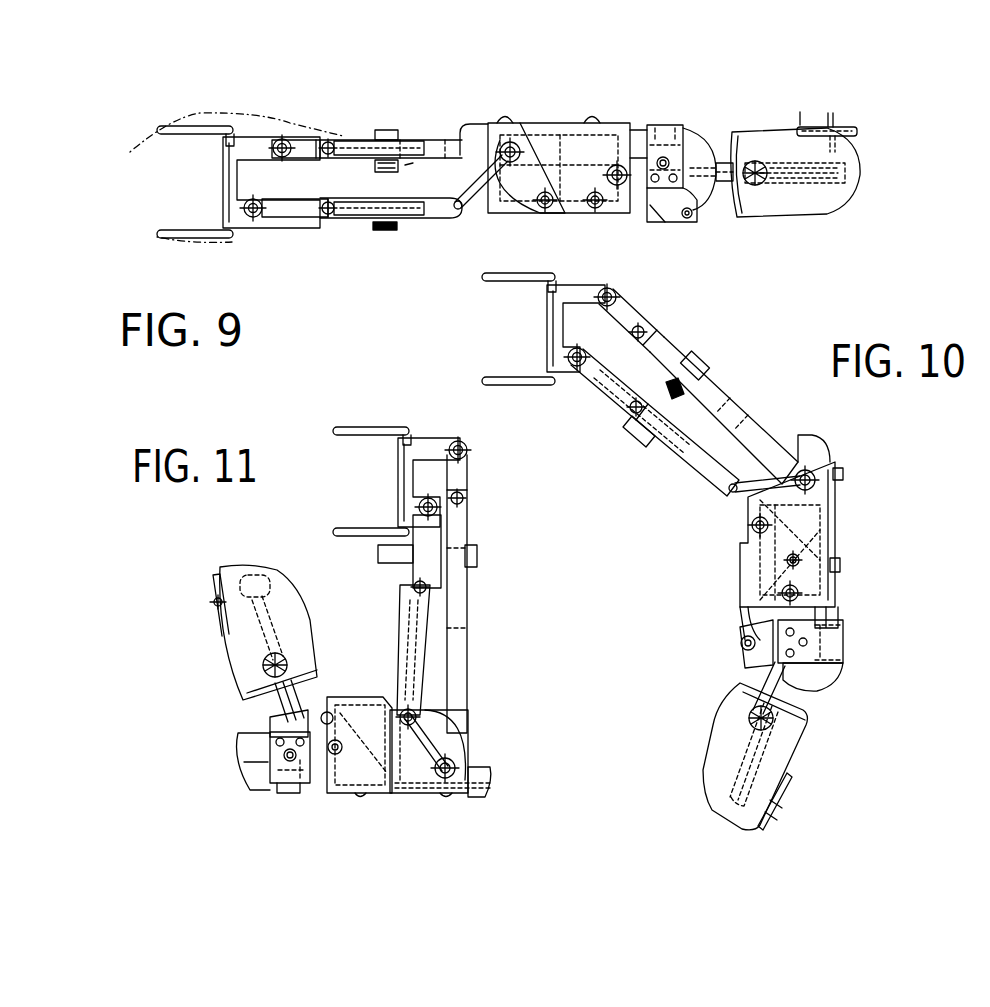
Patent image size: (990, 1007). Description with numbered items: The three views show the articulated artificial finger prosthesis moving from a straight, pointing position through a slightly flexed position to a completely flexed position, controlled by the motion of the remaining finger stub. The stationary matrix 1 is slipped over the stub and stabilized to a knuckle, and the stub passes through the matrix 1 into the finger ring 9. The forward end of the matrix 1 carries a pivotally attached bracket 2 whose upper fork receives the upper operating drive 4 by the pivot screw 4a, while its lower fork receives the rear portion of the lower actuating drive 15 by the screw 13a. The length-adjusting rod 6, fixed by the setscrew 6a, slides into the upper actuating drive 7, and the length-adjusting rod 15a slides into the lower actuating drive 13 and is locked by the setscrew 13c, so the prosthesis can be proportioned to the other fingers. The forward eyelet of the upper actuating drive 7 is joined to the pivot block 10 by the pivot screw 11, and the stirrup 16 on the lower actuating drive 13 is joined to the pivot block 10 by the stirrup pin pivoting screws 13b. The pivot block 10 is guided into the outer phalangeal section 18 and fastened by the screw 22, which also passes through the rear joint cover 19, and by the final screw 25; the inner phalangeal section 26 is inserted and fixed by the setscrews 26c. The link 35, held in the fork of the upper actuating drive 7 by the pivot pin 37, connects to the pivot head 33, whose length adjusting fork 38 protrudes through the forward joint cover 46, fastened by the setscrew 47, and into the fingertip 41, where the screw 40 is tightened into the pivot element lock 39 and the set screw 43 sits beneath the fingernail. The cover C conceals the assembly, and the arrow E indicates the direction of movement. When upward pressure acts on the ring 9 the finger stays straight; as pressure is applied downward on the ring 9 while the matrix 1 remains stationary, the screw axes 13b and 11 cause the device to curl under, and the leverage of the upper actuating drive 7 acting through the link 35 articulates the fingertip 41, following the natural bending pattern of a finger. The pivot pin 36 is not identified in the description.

In FIG. 9, the stationary matrix 1 is at (167, 126).
In FIG. 10, the stationary matrix 1 is at (507, 380).
In FIG. 11, the stationary matrix 1 is at (375, 427).
In FIG. 9, the bracket 2 is at (227, 165).
In FIG. 10, the bracket 2 is at (580, 291).
In FIG. 11, the bracket 2 is at (432, 440).
In FIG. 10, the upper operating drive 4 is at (622, 315).
In FIG. 11, the upper operating drive 4 is at (470, 472).
In FIG. 9, the pivot screw 4a is at (285, 139).
In FIG. 10, the pivot screw 4a is at (618, 297).
In FIG. 11, the pivot screw 4a is at (459, 440).
In FIG. 9, the length-adjusting rod 6 is at (364, 156).
In FIG. 9, the setscrew 6a is at (326, 155).
In FIG. 10, the setscrew 6a is at (638, 332).
In FIG. 11, the setscrew 6a is at (466, 498).
In FIG. 9, the upper actuating drive 7 is at (421, 147).
In FIG. 10, the upper actuating drive 7 is at (722, 412).
In FIG. 11, the upper actuating drive 7 is at (462, 600).
In FIG. 9, the finger ring 9 is at (386, 130).
In FIG. 10, the finger ring 9 is at (702, 362).
In FIG. 11, the finger ring 9 is at (382, 553).
In FIG. 9, the pivot block 10 is at (505, 182).
In FIG. 11, the pivot block 10 is at (452, 740).
In FIG. 9, the pivot screw 11 is at (542, 208).
In FIG. 10, the pivot screw 11 is at (751, 526).
In FIG. 11, the pivot screw 11 is at (416, 712).
In FIG. 9, the lower actuating drive 13 is at (402, 219).
In FIG. 10, the lower actuating drive 13 is at (700, 472).
In FIG. 11, the lower actuating drive 13 is at (408, 665).
In FIG. 9, the screw 13a is at (250, 216).
In FIG. 10, the screw 13a is at (575, 366).
In FIG. 11, the screw 13a is at (420, 506).
In FIG. 9, the stirrup pin pivoting screws 13b is at (516, 143).
In FIG. 10, the stirrup pin pivoting screws 13b is at (814, 473).
In FIG. 11, the stirrup pin pivoting screws 13b is at (458, 768).
In FIG. 9, the setscrew 13c is at (327, 215).
In FIG. 10, the setscrew 13c is at (636, 407).
In FIG. 11, the setscrew 13c is at (413, 587).
In FIG. 9, the rear portion of the lower actuating drive 15 is at (287, 213).
In FIG. 10, the rear portion of the lower actuating drive 15 is at (614, 385).
In FIG. 11, the rear portion of the lower actuating drive 15 is at (432, 555).
In FIG. 9, the length-adjusting rod 15a is at (355, 216).
In FIG. 9, the stirrup 16 is at (470, 209).
In FIG. 10, the stirrup 16 is at (740, 491).
In FIG. 11, the stirrup 16 is at (430, 745).
In FIG. 9, the outer phalangeal section 18 is at (618, 123).
In FIG. 10, the outer phalangeal section 18 is at (838, 518).
In FIG. 11, the outer phalangeal section 18 is at (422, 753).
In FIG. 9, the rear joint cover 19 is at (476, 130).
In FIG. 10, the rear joint cover 19 is at (812, 446).
In FIG. 10, the screw 22 is at (843, 475).
In FIG. 10, the final screw 25 is at (841, 565).
In FIG. 10, the inner phalangeal section 26 is at (840, 617).
In FIG. 11, the inner phalangeal section 26 is at (252, 767).
In FIG. 9, the setscrews 26c is at (621, 166).
In FIG. 9, the pivot head 33 is at (698, 202).
In FIG. 10, the pivot head 33 is at (768, 655).
In FIG. 11, the pivot head 33 is at (280, 722).
In FIG. 9, the link 35 is at (660, 210).
In FIG. 10, the link 35 is at (746, 632).
In FIG. 11, the link 35 is at (350, 722).
In FIG. 9, the pivot pin 36 is at (688, 219).
In FIG. 10, the pivot pin 36 is at (741, 643).
In FIG. 10, the pivot pin 37 is at (786, 560).
In FIG. 11, the pivot pin 37 is at (490, 777).
In FIG. 9, the length adjusting fork 38 is at (727, 185).
In FIG. 10, the length adjusting fork 38 is at (770, 680).
In FIG. 11, the length adjusting fork 38 is at (285, 692).
In FIG. 9, the pivot element lock 39 is at (765, 187).
In FIG. 10, the pivot element lock 39 is at (790, 718).
In FIG. 11, the pivot element lock 39 is at (282, 681).
In FIG. 9, the screw 40 is at (758, 183).
In FIG. 10, the screw 40 is at (749, 718).
In FIG. 11, the screw 40 is at (263, 667).
In FIG. 9, the fingertip 41 is at (815, 200).
In FIG. 10, the fingertip 41 is at (787, 740).
In FIG. 11, the fingertip 41 is at (238, 577).
In FIG. 9, the set screw 43 is at (835, 124).
In FIG. 11, the set screw 43 is at (214, 601).
In FIG. 9, the forward joint cover 46 is at (700, 143).
In FIG. 10, the forward joint cover 46 is at (815, 680).
In FIG. 10, the setscrew 47 is at (843, 645).
In FIG. 11, the setscrew 47 is at (290, 762).
In FIG. 9, the cover C is at (790, 110).
In FIG. 9, the direction E is at (412, 171).